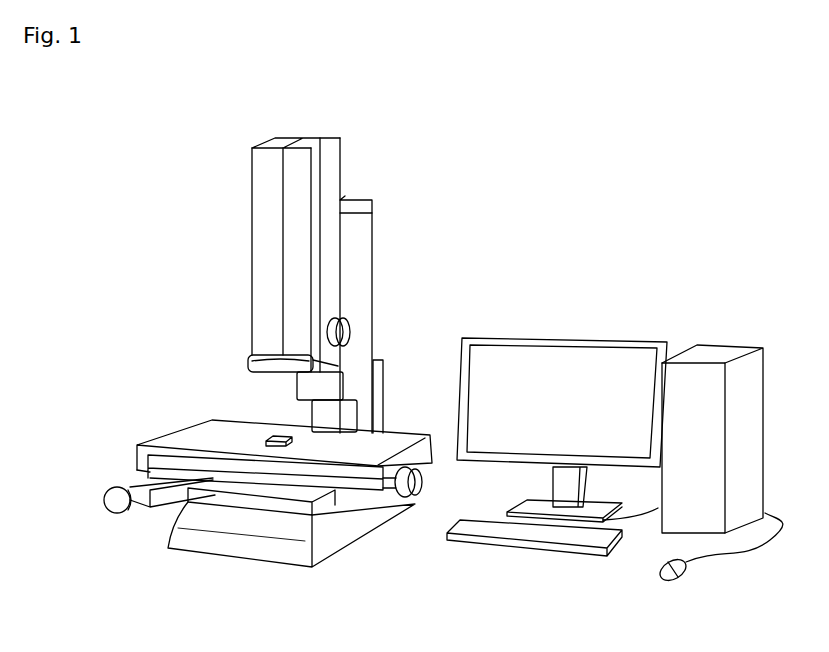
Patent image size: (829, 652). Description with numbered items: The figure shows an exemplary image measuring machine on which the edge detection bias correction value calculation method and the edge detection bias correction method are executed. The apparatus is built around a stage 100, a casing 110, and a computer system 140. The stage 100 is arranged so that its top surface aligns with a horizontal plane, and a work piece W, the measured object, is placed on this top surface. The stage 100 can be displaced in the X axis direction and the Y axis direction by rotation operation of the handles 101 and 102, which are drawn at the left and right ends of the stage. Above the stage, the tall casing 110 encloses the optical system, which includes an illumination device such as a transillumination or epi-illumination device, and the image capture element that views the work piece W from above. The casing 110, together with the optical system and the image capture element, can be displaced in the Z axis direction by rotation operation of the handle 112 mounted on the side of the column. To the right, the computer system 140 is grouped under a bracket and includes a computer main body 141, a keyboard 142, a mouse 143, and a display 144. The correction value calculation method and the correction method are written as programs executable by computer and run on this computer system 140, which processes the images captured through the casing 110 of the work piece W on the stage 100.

The stage 100 is at (180, 440).
The handle 101 is at (105, 494).
The handle 102 is at (413, 494).
The casing 110 is at (267, 196).
The handle 112 is at (343, 332).
The computer system 140 is at (780, 272).
The computer main body 141 is at (715, 348).
The keyboard 142 is at (545, 540).
The mouse 143 is at (670, 580).
The display 144 is at (528, 355).
The work piece W is at (273, 437).